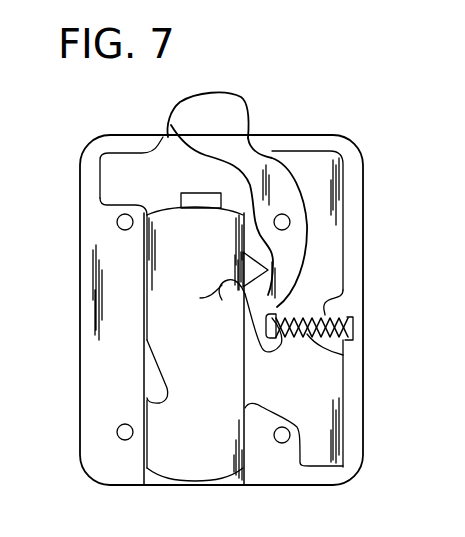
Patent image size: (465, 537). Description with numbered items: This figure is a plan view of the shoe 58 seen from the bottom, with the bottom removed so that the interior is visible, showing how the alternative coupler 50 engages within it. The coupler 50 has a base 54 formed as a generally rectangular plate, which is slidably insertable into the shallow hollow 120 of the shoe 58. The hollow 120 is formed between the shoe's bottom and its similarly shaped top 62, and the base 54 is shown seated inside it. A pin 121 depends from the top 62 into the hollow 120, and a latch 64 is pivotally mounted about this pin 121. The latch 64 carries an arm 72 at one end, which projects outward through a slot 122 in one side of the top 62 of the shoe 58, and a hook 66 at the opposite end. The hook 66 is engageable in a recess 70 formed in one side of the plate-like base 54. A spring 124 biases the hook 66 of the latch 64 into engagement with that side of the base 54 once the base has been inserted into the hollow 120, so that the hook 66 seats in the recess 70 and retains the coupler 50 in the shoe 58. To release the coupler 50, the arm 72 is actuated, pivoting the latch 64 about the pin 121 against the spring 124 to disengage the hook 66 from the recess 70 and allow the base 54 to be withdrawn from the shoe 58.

The alternative coupler 50 is at (398, 151).
The base 54 is at (203, 451).
The hollow shoe 58 is at (76, 450).
The top 62 is at (356, 260).
The latch 64 is at (296, 201).
The hook 66 is at (233, 305).
The recess 70 is at (220, 292).
The arm 72 is at (238, 115).
The hollow 120 is at (316, 382).
The pin 121 is at (290, 222).
The slot 122 is at (160, 137).
The spring 124 is at (343, 355).